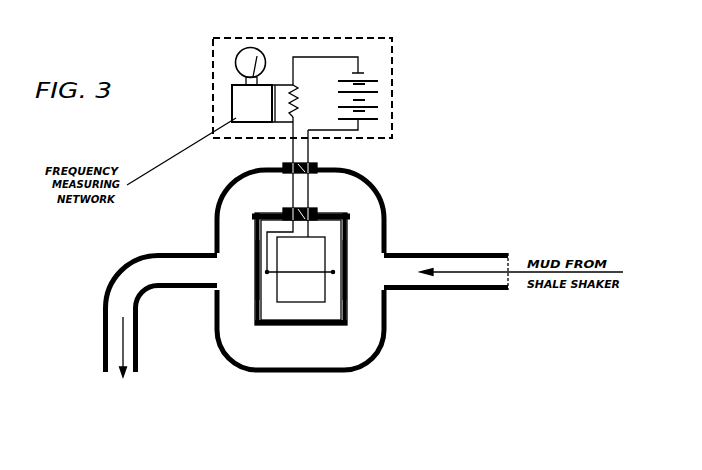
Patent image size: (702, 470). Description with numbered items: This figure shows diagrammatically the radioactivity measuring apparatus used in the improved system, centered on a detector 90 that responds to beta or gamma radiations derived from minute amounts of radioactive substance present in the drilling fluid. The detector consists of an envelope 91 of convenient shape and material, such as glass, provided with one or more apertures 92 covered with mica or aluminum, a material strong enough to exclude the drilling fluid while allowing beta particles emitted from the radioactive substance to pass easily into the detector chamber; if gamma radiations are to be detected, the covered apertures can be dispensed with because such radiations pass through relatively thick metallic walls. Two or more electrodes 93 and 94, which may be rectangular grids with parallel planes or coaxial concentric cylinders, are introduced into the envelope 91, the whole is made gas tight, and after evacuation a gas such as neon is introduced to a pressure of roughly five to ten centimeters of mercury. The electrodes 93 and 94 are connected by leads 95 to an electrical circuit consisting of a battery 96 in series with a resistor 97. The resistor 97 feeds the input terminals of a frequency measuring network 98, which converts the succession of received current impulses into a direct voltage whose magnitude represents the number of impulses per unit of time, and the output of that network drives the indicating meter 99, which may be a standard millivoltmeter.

The detector 90 is at (267, 302).
The envelope 91 is at (298, 325).
The apertures 92 is at (258, 260).
The electrode 93 is at (310, 302).
The electrode 94 is at (298, 273).
The leads 95 is at (295, 157).
The battery 96 is at (373, 100).
The resistor 97 is at (300, 102).
The frequency measuring network 98 is at (262, 103).
The indicating meter 99 is at (252, 62).